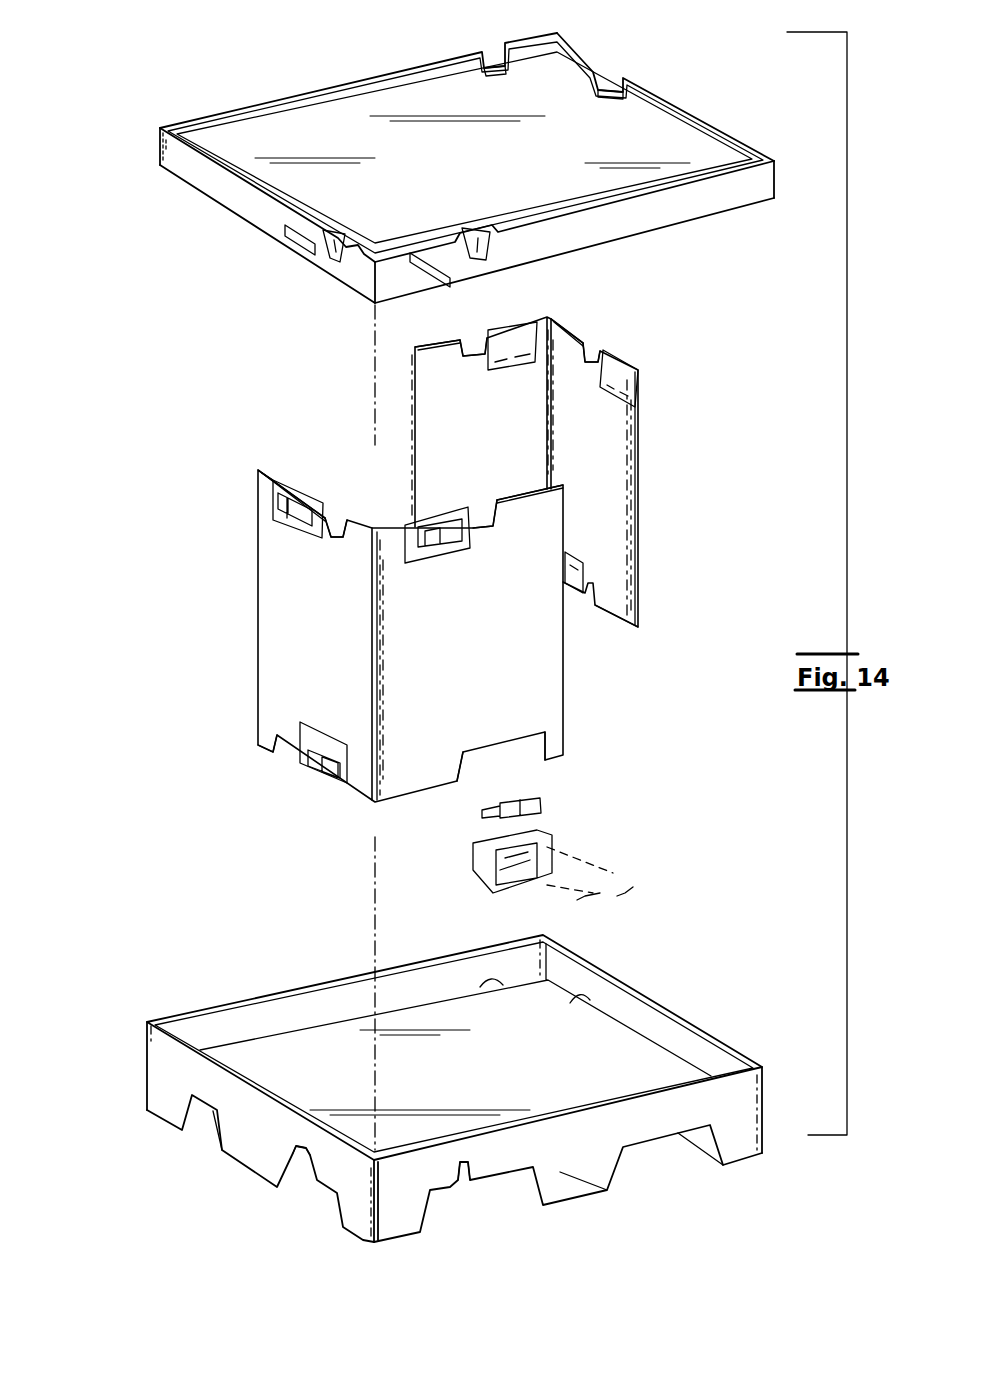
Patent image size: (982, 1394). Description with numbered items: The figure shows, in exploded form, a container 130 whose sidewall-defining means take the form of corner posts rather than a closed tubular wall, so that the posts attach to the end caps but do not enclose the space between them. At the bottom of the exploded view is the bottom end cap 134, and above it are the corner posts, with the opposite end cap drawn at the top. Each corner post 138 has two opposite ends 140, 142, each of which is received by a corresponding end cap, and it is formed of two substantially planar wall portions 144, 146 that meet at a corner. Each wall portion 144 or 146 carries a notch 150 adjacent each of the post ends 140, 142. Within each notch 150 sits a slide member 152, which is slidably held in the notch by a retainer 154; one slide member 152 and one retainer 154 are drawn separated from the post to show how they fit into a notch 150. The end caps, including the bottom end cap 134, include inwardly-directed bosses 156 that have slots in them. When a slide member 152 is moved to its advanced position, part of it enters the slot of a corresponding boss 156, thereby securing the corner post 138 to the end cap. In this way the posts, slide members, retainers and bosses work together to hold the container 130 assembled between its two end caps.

The container 130 is at (720, 115).
The bottom end cap 134 is at (147, 1052).
The corner post 138 is at (297, 633).
The post end 140 is at (270, 468).
The post end 142 is at (257, 747).
The wall portion 144 is at (268, 675).
The wall portion 146 is at (405, 378).
The notch 150 is at (478, 343).
The slide member 152 is at (305, 493).
The retainer 154 is at (287, 483).
The inwardly-directed boss 156 is at (595, 77).